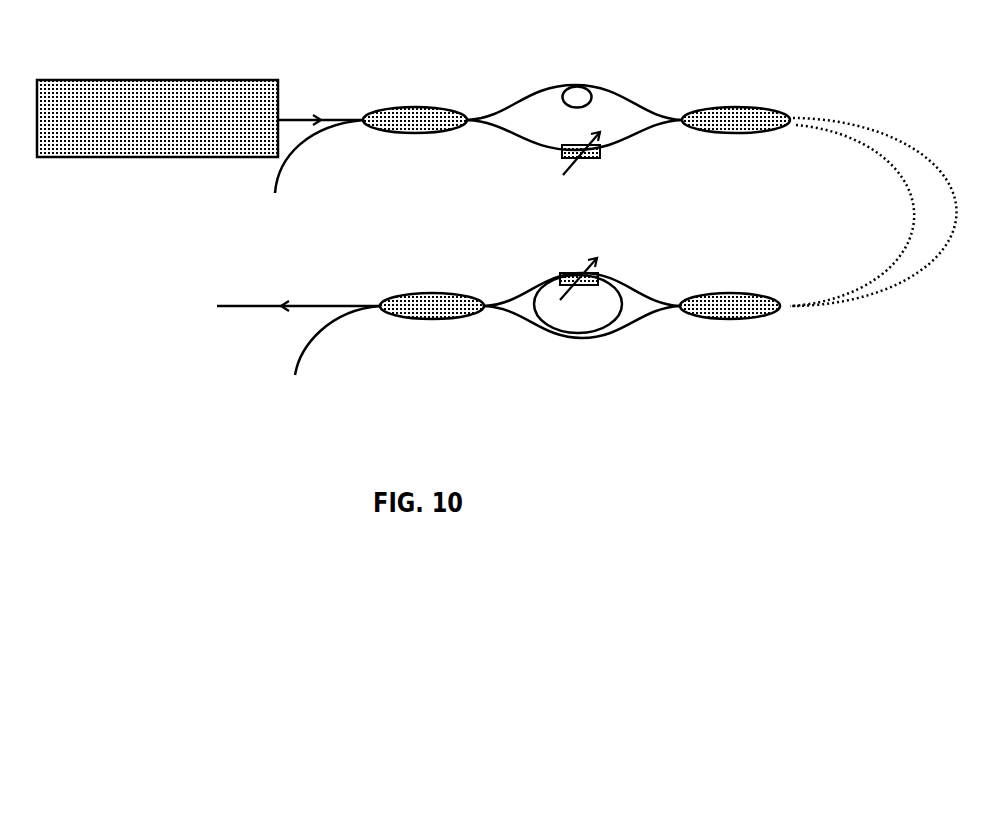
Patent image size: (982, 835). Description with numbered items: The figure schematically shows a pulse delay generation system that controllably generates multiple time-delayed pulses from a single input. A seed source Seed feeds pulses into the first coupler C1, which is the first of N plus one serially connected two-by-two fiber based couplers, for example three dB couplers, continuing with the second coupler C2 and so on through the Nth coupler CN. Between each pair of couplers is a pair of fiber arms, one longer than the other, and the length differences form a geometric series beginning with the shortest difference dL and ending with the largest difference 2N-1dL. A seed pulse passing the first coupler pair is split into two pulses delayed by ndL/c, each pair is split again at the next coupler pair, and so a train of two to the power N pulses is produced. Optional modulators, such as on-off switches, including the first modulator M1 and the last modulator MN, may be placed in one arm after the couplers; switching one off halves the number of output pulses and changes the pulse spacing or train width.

The seed source Seed is at (157, 118).
The first coupler C1 is at (415, 152).
The second coupler C2 is at (736, 151).
The Nth coupler CN is at (730, 337).
The first modulator M1 is at (590, 172).
The last modulator MN is at (611, 264).
The fiber length difference dL is at (576, 73).
The fiber length difference 2^(N-1)dL 2N-1dL is at (541, 282).